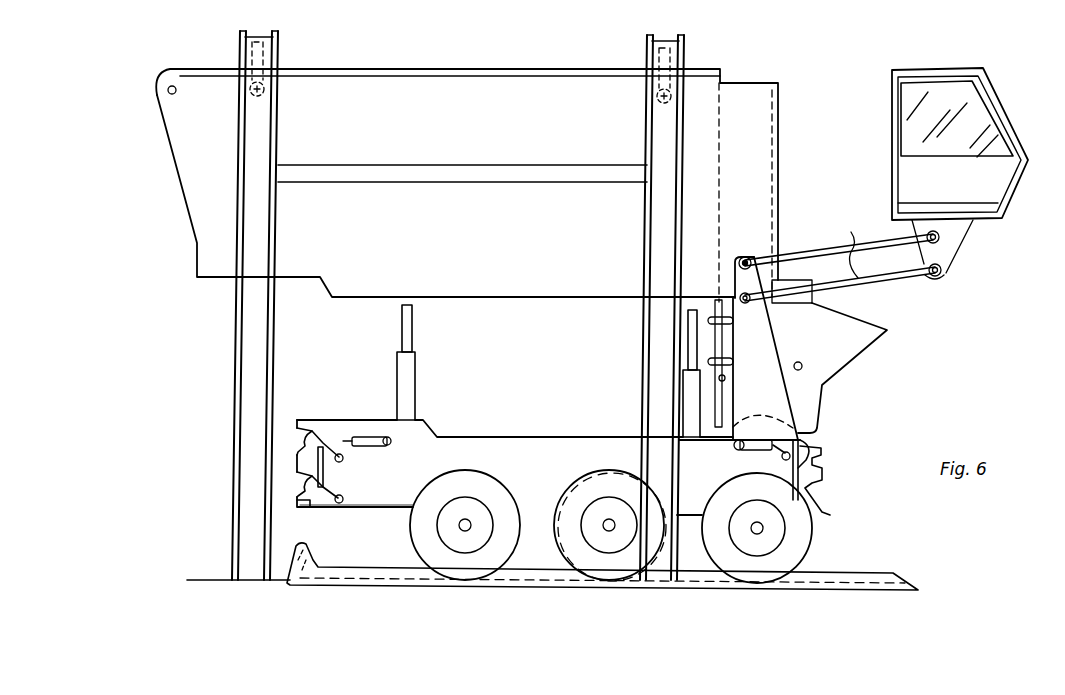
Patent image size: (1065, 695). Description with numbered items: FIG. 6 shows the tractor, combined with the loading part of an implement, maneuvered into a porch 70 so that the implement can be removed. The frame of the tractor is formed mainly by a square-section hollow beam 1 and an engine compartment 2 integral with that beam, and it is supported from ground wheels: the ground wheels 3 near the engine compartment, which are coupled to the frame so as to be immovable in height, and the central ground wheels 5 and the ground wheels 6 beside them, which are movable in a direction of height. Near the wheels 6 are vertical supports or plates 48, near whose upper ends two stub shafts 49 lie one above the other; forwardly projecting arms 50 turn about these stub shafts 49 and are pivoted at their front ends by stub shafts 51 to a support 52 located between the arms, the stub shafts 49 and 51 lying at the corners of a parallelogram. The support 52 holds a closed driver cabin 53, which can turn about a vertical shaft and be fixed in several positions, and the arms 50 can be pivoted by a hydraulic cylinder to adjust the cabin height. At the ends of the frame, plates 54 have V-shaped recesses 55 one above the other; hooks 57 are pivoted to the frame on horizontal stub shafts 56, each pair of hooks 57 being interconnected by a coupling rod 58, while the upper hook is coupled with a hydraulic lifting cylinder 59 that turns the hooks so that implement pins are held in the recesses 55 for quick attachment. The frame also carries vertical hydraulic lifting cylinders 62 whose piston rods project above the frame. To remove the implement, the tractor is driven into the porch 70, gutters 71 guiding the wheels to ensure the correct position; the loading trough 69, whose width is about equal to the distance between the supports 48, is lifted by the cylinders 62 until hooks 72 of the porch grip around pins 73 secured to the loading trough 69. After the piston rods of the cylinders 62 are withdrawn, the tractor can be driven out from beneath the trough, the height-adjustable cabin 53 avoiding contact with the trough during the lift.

The square-section hollow beam 1 is at (547, 440).
The engine compartment 2 is at (398, 502).
The ground wheels 3 is at (420, 542).
The central ground wheels 5 is at (560, 543).
The ground wheels 6 is at (718, 552).
The vertical supports or plates 48 is at (767, 348).
The stub shafts 49 is at (745, 258).
The forwardly projecting arms 50 is at (846, 250).
The stub shafts 51 is at (940, 240).
The support 52 is at (942, 273).
The closed driver cabin 53 is at (892, 145).
The plates 54 is at (310, 507).
The V-shaped recesses 55 is at (822, 512).
The horizontal stub shafts 56 is at (343, 498).
The hooks 57 is at (312, 433).
The coupling rod 58 is at (325, 468).
The hydraulic lifting cylinder 59 is at (370, 435).
The vertical hydraulic lifting cylinders 62 is at (402, 330).
The loading trough 69 is at (472, 82).
The porch 70 is at (267, 238).
The gutters 71 is at (388, 575).
The hooks 72 is at (265, 104).
The pins 73 is at (246, 89).